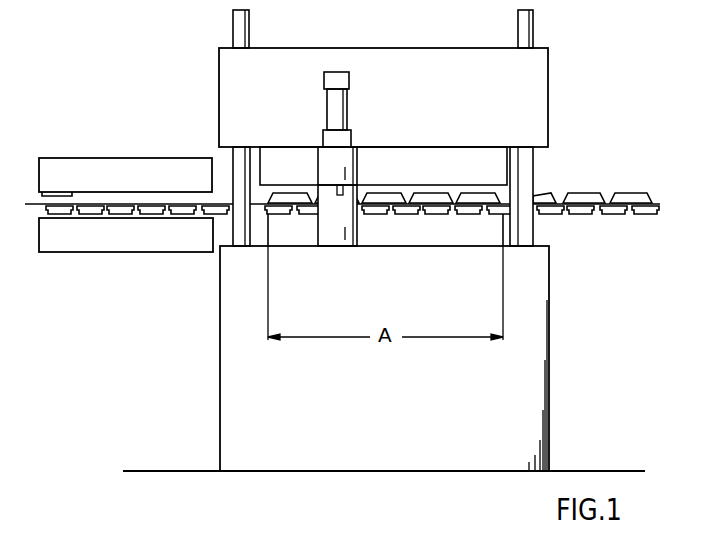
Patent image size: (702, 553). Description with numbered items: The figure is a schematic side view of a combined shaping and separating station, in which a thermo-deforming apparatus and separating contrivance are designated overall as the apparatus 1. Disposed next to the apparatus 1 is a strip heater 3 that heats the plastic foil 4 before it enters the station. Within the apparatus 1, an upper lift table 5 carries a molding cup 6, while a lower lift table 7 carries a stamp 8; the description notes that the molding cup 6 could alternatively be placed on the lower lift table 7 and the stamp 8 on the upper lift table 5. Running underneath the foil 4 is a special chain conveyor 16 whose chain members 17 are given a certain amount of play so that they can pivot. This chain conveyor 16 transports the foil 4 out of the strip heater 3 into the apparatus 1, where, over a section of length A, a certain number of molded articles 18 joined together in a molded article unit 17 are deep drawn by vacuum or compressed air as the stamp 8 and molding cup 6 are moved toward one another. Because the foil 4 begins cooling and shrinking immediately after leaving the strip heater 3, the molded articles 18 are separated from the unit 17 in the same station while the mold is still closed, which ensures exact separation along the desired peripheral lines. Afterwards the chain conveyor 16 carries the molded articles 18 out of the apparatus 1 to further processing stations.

The thermo-deforming apparatus and separating contrivance 1 is at (205, 373).
The strip heater 3 is at (98, 157).
The plastic foil 4 is at (167, 203).
The lift table 5 is at (421, 48).
The molding cup 6 is at (415, 157).
The lower lift table 7 is at (537, 281).
The stamp 8 is at (493, 234).
The chain conveyor 16 is at (127, 218).
The chain members 17 is at (407, 214).
The molded articles 18 is at (484, 197).